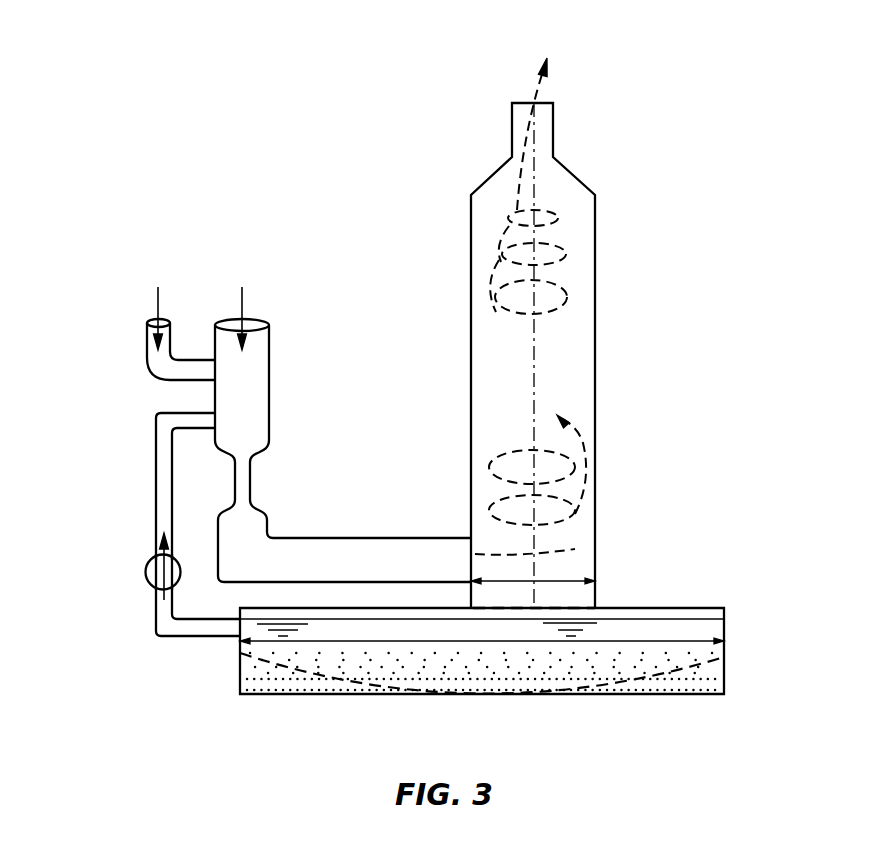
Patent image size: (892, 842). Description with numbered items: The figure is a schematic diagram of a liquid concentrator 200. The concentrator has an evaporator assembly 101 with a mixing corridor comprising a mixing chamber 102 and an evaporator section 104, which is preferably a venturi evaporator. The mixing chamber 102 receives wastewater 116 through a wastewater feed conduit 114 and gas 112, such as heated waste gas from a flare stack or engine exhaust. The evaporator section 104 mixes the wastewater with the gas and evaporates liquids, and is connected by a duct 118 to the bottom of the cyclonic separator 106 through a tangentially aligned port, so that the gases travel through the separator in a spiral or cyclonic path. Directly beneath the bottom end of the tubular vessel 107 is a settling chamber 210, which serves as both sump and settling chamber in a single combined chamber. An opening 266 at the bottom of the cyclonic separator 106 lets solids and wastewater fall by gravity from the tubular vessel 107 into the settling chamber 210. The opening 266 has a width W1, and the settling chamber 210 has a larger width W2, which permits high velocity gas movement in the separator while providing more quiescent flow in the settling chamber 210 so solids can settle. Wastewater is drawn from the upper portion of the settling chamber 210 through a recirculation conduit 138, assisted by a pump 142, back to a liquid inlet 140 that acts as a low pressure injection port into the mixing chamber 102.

The liquid concentrator 200 is at (650, 88).
The cyclonic separator 106 is at (597, 356).
The tubular vessel 107 is at (597, 258).
The evaporator assembly 101 is at (280, 450).
The mixing chamber 102 is at (262, 365).
The evaporator section 104 is at (252, 477).
The gas 112 is at (242, 300).
The wastewater feed conduit 114 is at (147, 358).
The wastewater 116 is at (158, 301).
The duct 118 is at (379, 540).
The recirculation conduit 138 is at (192, 637).
The liquid inlet 140 is at (155, 420).
The pump 142 is at (147, 582).
The settling chamber 210 is at (667, 608).
The opening 266 is at (563, 606).
The width of opening W1 is at (563, 578).
The width of settling chamber W2 is at (640, 642).